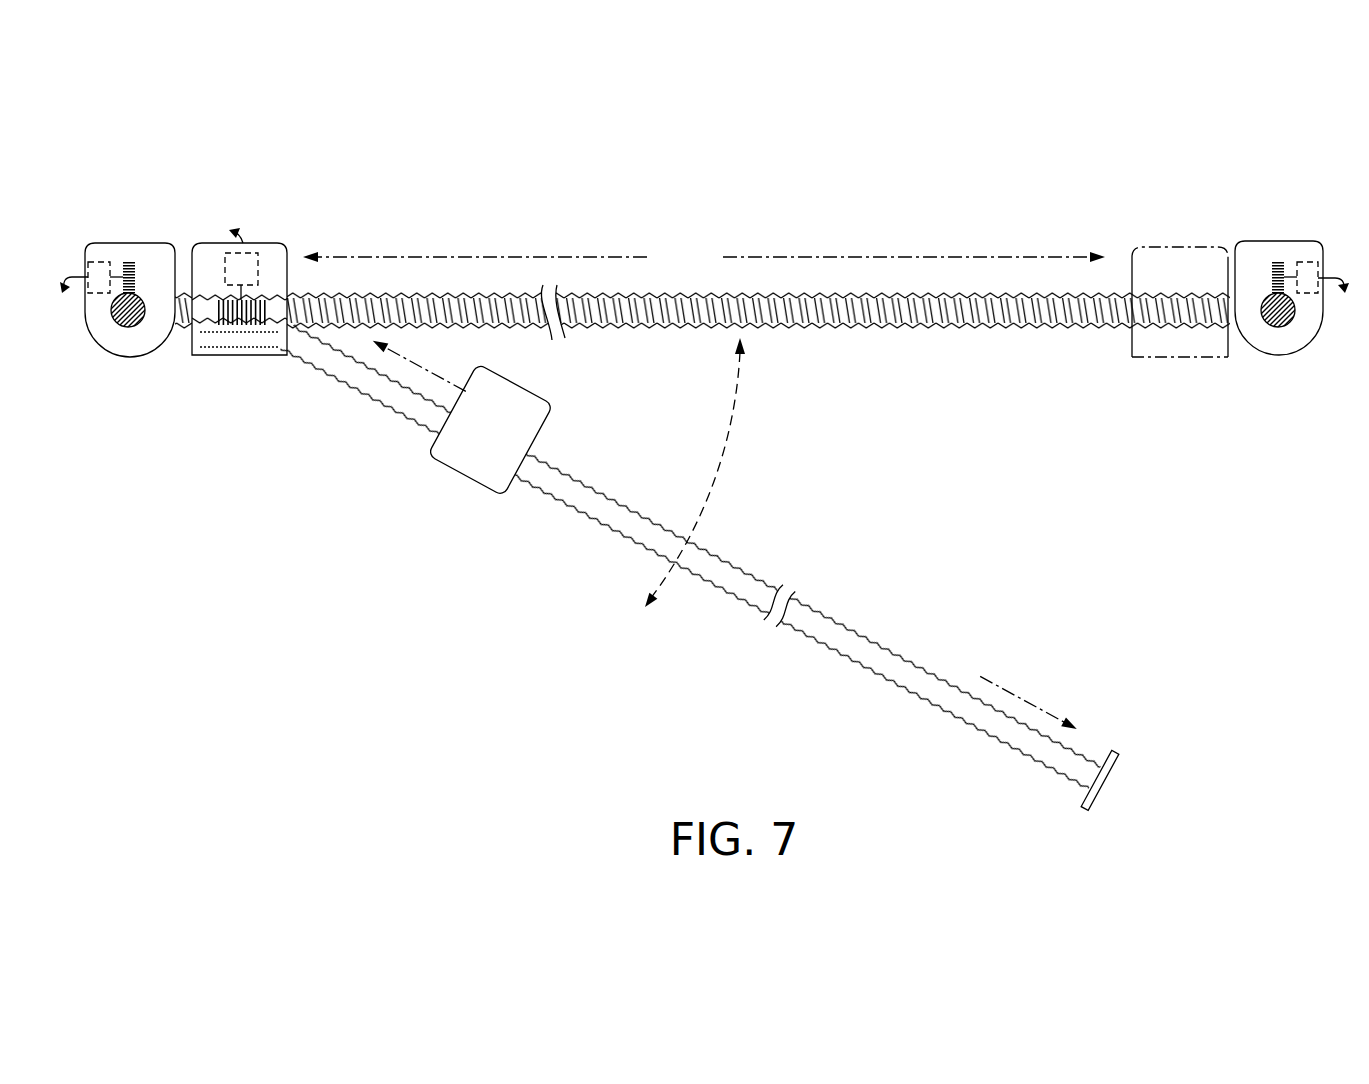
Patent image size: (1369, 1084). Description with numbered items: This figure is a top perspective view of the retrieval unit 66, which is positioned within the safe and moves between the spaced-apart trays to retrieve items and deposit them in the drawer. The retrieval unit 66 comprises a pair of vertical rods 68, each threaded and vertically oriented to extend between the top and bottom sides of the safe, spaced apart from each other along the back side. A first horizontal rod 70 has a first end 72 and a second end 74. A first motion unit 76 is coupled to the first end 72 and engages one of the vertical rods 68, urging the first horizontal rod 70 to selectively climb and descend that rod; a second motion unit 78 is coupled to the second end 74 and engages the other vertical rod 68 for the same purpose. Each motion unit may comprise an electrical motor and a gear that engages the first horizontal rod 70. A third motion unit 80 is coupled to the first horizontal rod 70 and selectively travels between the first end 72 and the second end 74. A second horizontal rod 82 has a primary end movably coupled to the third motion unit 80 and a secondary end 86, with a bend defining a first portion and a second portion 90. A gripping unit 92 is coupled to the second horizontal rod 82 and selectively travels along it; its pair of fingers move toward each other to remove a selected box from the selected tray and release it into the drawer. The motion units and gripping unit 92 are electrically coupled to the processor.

The retrieval unit 66 is at (679, 248).
The vertical rods 68 is at (133, 325).
The first horizontal rod 70 is at (884, 294).
The first end 72 is at (1243, 297).
The second end 74 is at (173, 312).
The first motion unit 76 is at (1318, 241).
The second motion unit 78 is at (115, 245).
The third motion unit 80 is at (237, 356).
The second horizontal rod 82 is at (587, 517).
The secondary end 86 is at (1106, 782).
The second portion 90 is at (748, 585).
The gripping unit 92 is at (480, 482).